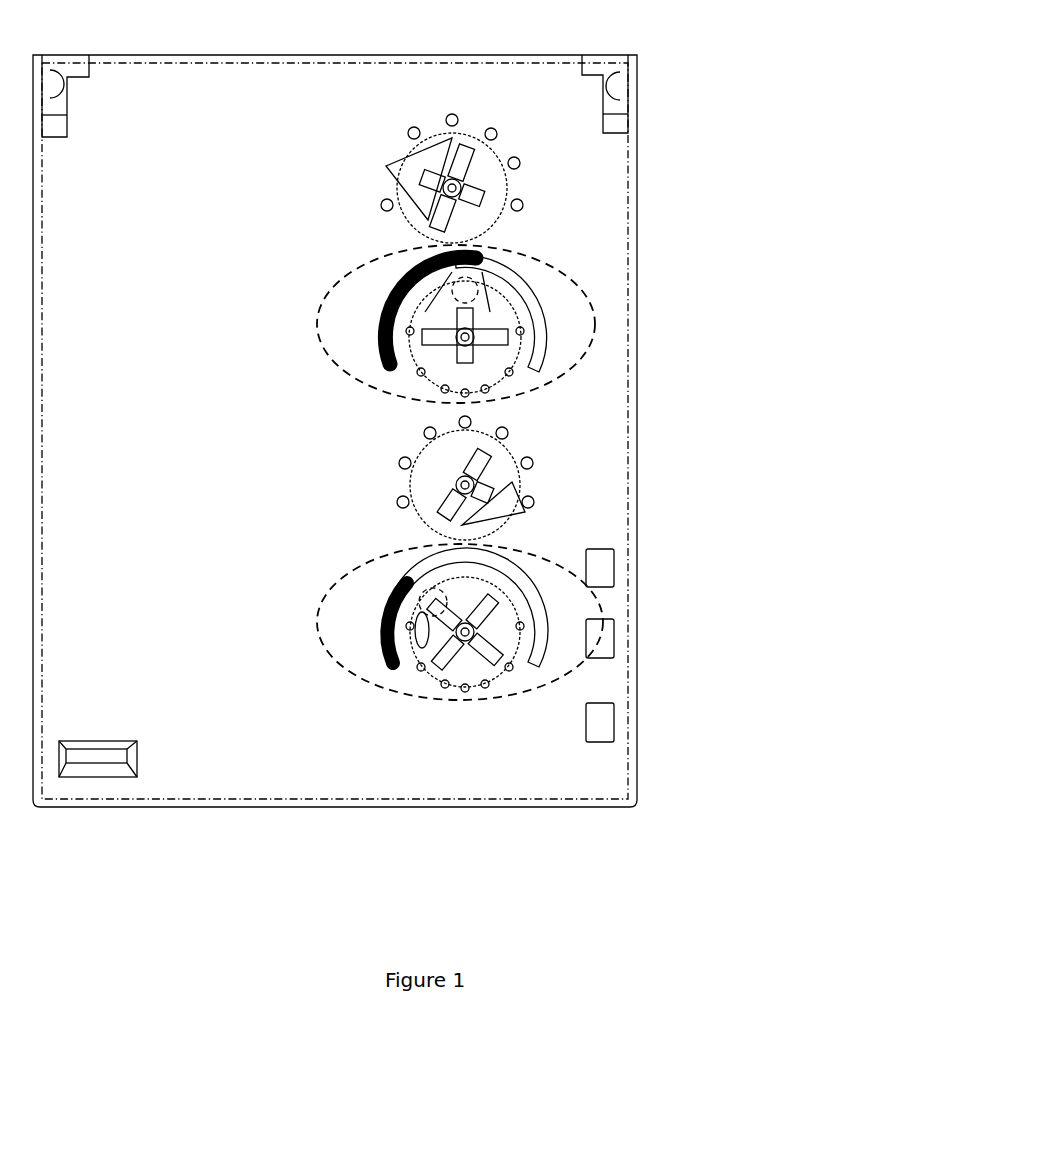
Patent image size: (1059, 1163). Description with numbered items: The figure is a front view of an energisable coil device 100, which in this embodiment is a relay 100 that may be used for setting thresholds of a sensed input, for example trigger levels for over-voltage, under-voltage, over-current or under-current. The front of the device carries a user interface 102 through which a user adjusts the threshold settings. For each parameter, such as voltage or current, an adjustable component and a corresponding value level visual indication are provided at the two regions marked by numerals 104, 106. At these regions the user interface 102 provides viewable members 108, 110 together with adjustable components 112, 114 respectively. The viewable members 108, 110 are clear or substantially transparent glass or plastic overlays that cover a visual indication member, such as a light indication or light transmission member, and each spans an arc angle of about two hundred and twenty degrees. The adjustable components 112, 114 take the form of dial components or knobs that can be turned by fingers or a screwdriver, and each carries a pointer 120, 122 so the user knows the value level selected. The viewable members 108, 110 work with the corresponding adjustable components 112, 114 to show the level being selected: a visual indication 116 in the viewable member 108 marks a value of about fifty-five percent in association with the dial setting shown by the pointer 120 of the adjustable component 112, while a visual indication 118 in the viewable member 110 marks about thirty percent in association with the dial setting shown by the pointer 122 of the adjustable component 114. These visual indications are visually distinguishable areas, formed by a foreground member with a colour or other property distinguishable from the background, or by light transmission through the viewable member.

The energisable coil device 100 is at (166, 842).
The user interface 102 is at (517, 88).
The adjustable component and value level visual indication location 104 is at (573, 280).
The adjustable component and value level visual indication location 106 is at (540, 554).
The viewable member 108 is at (542, 315).
The viewable member 110 is at (542, 602).
The adjustable component 112 is at (433, 357).
The adjustable component 114 is at (465, 663).
The visual indication 116 is at (440, 262).
The visual indication 118 is at (405, 591).
The pointer 120 is at (462, 288).
The pointer 122 is at (430, 597).